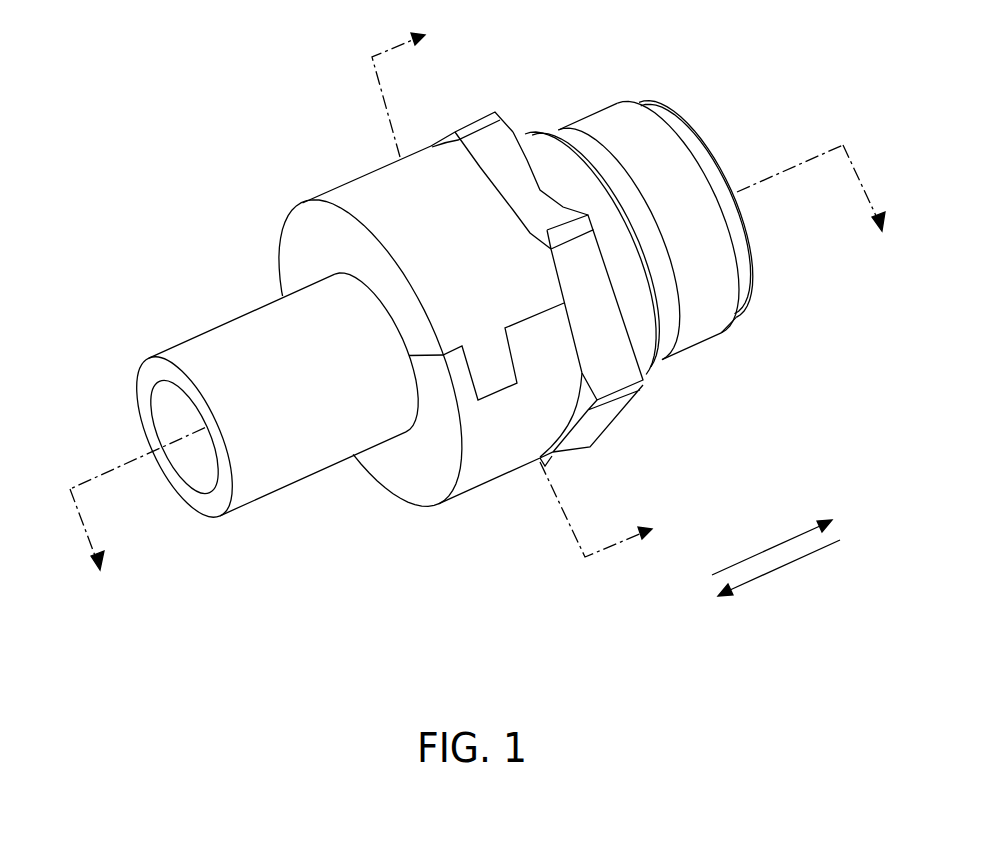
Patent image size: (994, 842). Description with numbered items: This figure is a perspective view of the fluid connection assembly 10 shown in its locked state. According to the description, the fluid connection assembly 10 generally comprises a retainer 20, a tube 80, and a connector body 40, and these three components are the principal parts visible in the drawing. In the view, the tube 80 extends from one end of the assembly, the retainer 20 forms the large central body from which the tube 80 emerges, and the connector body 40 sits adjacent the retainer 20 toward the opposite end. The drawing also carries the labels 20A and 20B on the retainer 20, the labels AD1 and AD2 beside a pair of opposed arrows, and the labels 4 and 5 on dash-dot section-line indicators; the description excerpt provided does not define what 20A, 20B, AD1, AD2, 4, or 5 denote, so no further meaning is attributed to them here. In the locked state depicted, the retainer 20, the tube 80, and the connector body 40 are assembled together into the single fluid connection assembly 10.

The fluid connection assembly 10 is at (401, 298).
The retainer 20 is at (421, 337).
The first body portion 20A is at (343, 200).
The second body portion 20B is at (413, 488).
The connector body 40 is at (503, 128).
The tube 80 is at (235, 332).
The section line 4- 4 is at (483, 375).
The section line 5- 5 is at (525, 285).
The first axial direction AD1 is at (780, 540).
The second axial direction AD2 is at (783, 565).